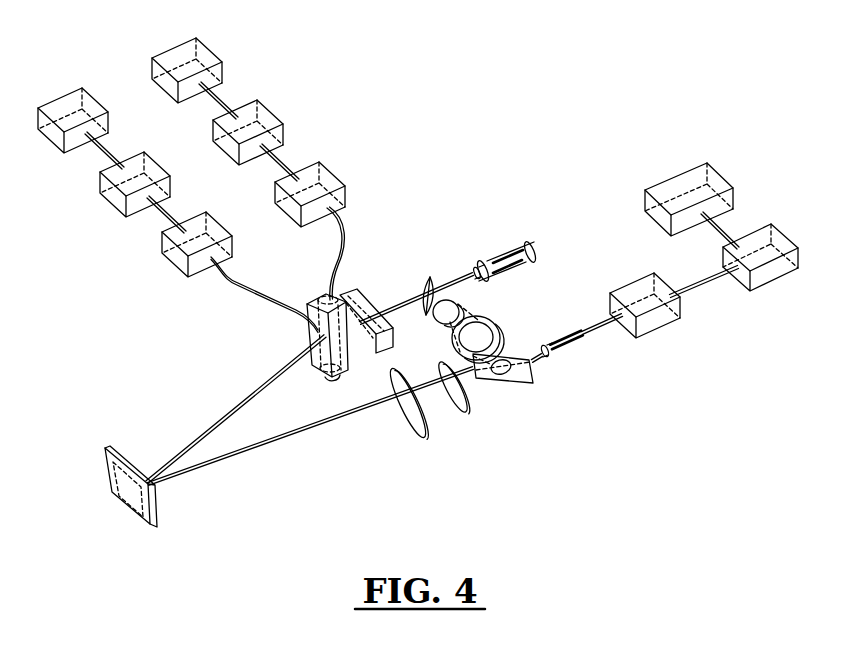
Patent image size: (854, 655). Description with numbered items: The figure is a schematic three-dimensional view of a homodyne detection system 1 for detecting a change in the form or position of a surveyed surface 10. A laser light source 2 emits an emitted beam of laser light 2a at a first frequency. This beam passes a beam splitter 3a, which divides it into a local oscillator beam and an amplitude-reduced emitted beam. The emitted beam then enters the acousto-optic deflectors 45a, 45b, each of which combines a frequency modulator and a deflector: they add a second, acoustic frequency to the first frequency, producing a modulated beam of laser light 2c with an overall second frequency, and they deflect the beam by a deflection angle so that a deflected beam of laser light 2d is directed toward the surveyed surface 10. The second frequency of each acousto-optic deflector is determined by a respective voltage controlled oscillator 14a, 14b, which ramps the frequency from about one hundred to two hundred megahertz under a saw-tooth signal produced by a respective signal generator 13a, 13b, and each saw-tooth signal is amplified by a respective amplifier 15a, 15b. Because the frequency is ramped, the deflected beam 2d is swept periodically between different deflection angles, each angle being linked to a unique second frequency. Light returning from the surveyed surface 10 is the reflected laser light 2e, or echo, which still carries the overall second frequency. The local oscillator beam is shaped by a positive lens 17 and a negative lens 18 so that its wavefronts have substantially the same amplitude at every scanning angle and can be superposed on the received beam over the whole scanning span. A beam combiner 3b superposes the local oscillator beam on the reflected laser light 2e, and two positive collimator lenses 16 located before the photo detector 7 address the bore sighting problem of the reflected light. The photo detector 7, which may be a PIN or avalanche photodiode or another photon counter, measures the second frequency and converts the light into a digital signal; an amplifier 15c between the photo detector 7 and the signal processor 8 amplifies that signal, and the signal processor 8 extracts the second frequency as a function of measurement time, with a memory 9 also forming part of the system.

The homodyne detection system 1 is at (100, 60).
The laser light source 2 is at (525, 244).
The emitted beam of laser light 2a is at (450, 282).
The modulated beam of laser light 2c is at (229, 409).
The deflected beam of laser light 2d is at (218, 417).
The reflected laser light 2e is at (313, 431).
The beam splitter 3a is at (429, 280).
The beam combiner 3b is at (517, 378).
The photo detector 7 is at (565, 347).
The signal processor 8 is at (763, 237).
The memory 9 is at (683, 185).
The surveyed surface 10 is at (127, 460).
The signal generator 13a is at (208, 60).
The signal generator 13b is at (95, 108).
The voltage controlled oscillator 14a is at (272, 120).
The voltage controlled oscillator 14b is at (155, 165).
The amplifier 15a is at (333, 181).
The amplifier 15b is at (220, 230).
The amplifier 15c is at (637, 285).
The positive collimator lenses 16 is at (413, 430).
The positive lens 17 is at (457, 303).
The negative lens 18 is at (506, 326).
The acousto-optic deflector 45a is at (313, 333).
The acousto-optic deflector 45b is at (367, 313).